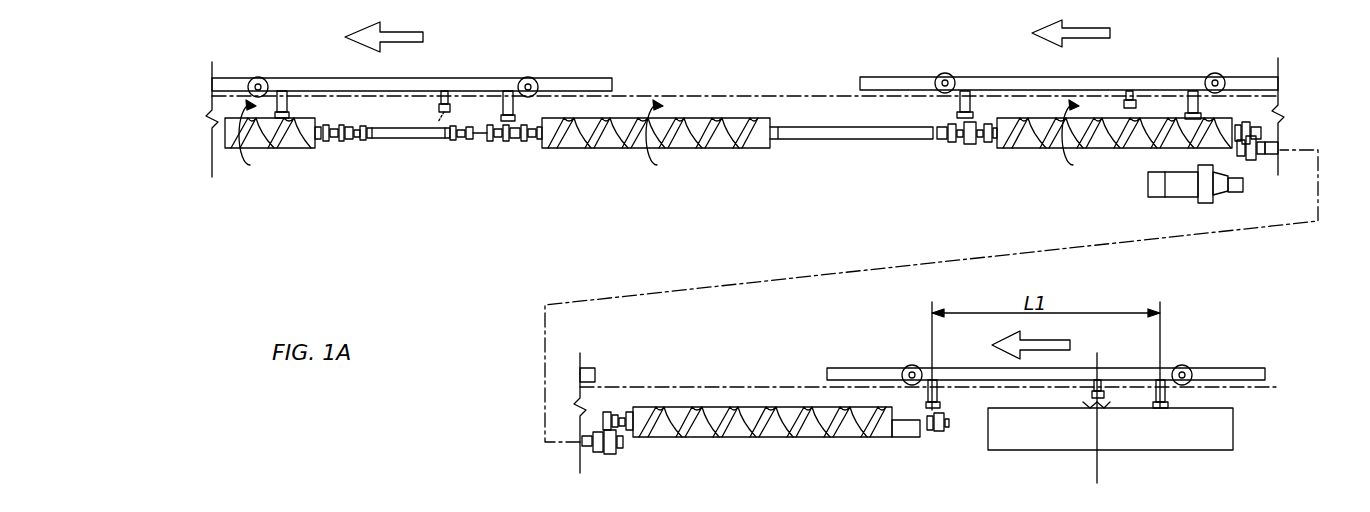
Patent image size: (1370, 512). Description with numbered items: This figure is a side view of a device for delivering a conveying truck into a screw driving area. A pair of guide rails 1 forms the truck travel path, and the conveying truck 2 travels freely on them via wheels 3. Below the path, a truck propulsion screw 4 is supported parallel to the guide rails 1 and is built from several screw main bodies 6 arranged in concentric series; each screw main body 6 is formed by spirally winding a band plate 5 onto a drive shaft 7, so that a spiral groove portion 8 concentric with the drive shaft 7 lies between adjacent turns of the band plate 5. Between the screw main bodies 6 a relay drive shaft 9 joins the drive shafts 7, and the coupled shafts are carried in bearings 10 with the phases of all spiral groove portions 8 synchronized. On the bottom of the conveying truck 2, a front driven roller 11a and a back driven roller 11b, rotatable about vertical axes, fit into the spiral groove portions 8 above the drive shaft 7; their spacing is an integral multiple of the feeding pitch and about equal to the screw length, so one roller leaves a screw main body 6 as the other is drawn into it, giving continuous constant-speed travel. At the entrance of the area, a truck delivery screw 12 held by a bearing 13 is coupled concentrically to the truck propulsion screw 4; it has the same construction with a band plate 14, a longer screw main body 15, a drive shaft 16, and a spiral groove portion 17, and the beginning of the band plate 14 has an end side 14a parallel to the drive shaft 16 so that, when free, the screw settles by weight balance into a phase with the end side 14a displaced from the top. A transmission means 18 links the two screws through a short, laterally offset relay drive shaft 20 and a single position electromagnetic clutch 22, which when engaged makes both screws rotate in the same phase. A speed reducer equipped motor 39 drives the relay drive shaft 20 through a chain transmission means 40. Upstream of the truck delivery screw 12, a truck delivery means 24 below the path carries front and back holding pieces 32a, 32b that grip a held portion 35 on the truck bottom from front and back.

The guide rails 1 is at (770, 94).
The conveying truck 2 is at (582, 75).
The wheels 3 is at (258, 77).
The truck propulsion screw 4 is at (712, 112).
The band plate 5 is at (222, 146).
The screw main body 6 is at (280, 150).
The drive shaft 7 is at (310, 142).
The spiral groove portion 8 is at (262, 150).
The relay drive shaft 9 is at (409, 140).
The bearings 10 is at (330, 142).
The front-side driven roller 11a is at (287, 112).
The back-side driven roller 11b is at (508, 115).
The truck delivery screw 12 is at (720, 407).
The bearing 13 is at (620, 413).
The band plate 14 is at (830, 437).
The end side 14a is at (905, 420).
The screw main body 15 is at (752, 437).
The drive shaft 16 is at (808, 425).
The spiral groove portion 17 is at (690, 440).
The transmission means 18 is at (1272, 170).
The relay drive shaft 20 is at (1275, 140).
The single position electromagnetic clutch 22 is at (599, 455).
The truck delivery means 24 is at (1233, 430).
The front holding piece 32a is at (1105, 410).
The back holding piece 32b is at (1090, 410).
The held portion 35 is at (438, 124).
The speed reducer equipped motor 39 is at (1178, 192).
The chain transmission means 40 is at (1240, 160).